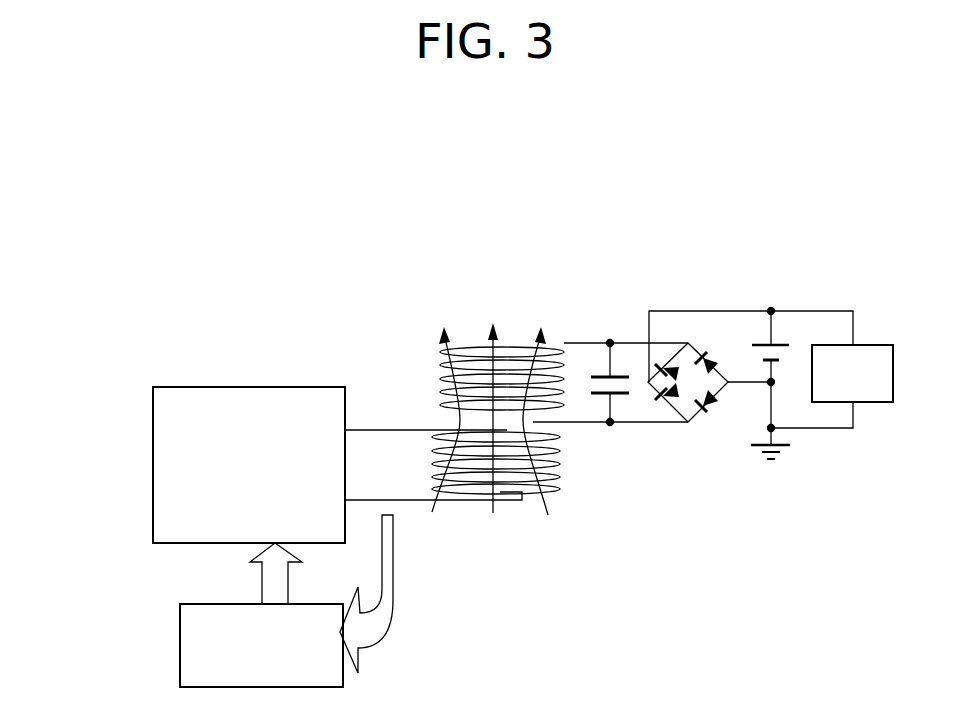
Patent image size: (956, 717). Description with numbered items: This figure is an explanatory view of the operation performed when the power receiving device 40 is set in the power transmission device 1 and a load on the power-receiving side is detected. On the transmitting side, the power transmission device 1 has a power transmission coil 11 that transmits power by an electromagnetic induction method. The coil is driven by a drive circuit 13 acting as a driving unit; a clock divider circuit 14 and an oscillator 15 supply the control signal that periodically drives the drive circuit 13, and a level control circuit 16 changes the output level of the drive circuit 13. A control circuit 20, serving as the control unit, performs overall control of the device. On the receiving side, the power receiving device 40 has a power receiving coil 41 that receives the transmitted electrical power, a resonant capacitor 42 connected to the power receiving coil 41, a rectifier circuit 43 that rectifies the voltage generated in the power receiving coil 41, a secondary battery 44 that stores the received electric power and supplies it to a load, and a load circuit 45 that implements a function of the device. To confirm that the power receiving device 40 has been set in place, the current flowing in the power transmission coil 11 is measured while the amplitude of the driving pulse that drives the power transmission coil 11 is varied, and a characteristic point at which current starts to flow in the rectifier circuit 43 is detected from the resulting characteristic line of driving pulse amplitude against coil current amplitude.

The power transmission device 1 is at (230, 192).
The power transmission coil 11 is at (553, 490).
The drive circuit 13 is at (153, 458).
The clock divider circuit 14 is at (249, 465).
The oscillator 15 is at (249, 465).
The level control circuit 16 is at (249, 465).
The control circuit 20 is at (180, 648).
The power receiving device 40 is at (794, 184).
The power receiving coil 41 is at (562, 347).
The resonant capacitor 42 is at (622, 376).
The rectifier circuit 43 is at (699, 336).
The secondary battery 44 is at (779, 343).
The load circuit 45 is at (885, 345).